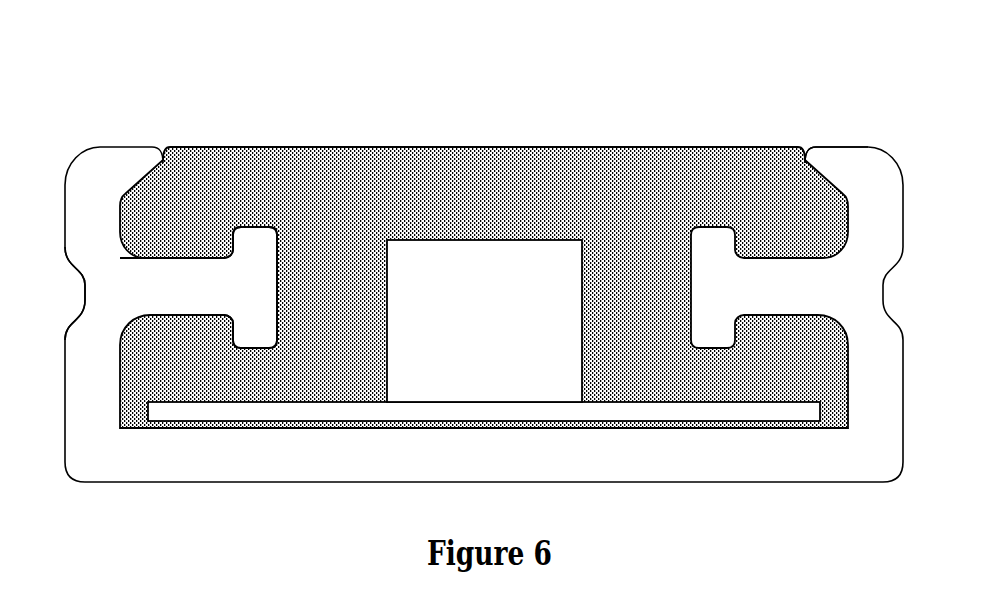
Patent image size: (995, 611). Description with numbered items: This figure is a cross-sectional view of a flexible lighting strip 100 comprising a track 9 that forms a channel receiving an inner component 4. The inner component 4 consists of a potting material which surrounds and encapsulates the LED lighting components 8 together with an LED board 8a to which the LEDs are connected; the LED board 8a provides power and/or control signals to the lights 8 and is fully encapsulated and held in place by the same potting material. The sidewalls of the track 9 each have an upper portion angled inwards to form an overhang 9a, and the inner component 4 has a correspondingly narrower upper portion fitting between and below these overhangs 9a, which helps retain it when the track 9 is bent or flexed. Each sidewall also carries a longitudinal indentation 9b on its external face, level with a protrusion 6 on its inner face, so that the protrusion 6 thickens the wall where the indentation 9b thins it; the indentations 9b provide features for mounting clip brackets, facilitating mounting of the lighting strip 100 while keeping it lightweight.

The lighting strip 100 is at (460, 290).
The inner component 4 is at (480, 206).
The protrusion 6 is at (188, 278).
The lighting components 8 is at (486, 331).
The LED board 8a is at (672, 412).
The track 9 is at (460, 325).
The overhang 9a is at (828, 162).
The longitudinal indentation 9b is at (85, 282).